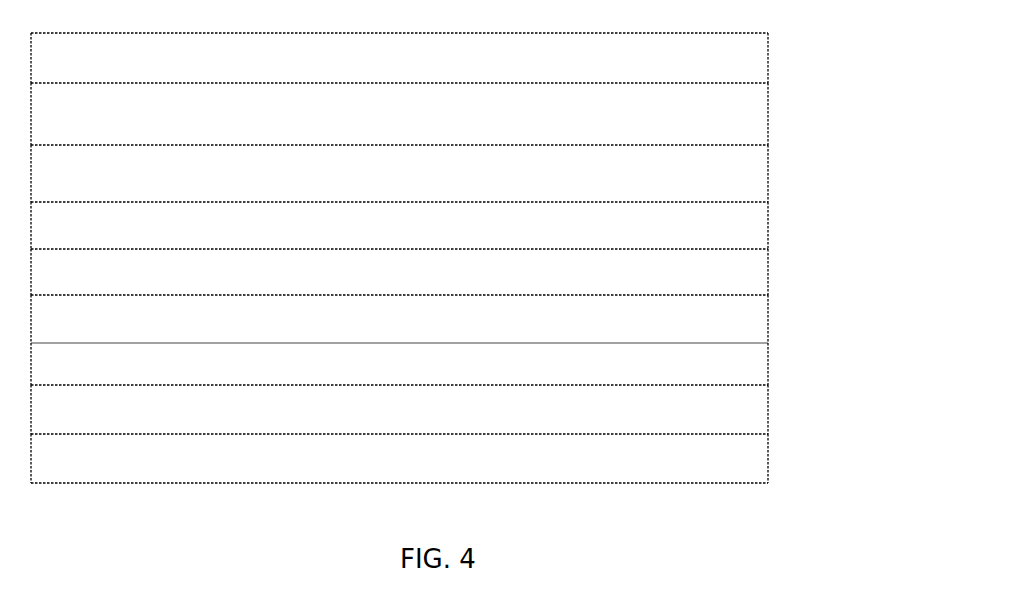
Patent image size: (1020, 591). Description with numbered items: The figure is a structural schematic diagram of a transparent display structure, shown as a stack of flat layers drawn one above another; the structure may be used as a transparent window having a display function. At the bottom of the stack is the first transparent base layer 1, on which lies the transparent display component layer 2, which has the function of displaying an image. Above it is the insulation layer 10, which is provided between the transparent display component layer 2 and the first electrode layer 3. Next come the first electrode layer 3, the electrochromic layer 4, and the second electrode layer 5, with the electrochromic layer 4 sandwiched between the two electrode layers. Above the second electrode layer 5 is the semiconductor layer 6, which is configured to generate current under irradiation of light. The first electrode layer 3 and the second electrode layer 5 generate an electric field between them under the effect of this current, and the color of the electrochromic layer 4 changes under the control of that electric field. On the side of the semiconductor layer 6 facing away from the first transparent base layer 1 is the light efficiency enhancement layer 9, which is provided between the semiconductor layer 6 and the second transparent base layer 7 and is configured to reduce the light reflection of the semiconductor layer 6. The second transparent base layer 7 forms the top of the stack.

The first transparent base layer 1 is at (769, 467).
The transparent display component layer 2 is at (769, 417).
The first electrode layer 3 is at (769, 310).
The electrochromic layer 4 is at (769, 270).
The second electrode layer 5 is at (769, 219).
The semiconductor layer 6 is at (769, 170).
The second transparent base layer 7 is at (769, 69).
The light efficiency enhancement layer 9 is at (769, 122).
The insulation layer 10 is at (769, 367).